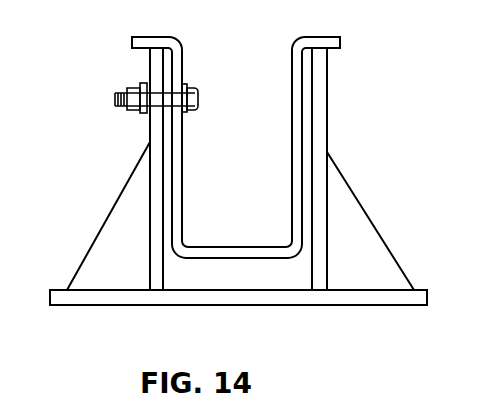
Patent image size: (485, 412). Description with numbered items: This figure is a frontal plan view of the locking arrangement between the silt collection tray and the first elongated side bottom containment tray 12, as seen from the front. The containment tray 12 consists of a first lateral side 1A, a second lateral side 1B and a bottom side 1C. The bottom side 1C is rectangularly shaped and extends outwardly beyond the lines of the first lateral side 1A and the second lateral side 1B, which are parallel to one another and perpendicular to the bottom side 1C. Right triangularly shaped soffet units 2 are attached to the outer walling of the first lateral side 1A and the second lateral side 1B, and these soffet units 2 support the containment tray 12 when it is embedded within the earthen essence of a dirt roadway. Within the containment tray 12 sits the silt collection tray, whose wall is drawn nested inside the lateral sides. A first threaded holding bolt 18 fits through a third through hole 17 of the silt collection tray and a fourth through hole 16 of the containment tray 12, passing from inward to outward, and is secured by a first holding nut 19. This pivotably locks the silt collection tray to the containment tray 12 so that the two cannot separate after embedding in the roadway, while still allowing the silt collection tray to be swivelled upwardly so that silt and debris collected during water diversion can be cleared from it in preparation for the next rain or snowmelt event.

The first lateral side 1A is at (328, 120).
The second lateral side 1B is at (149, 142).
The bottom side 1C is at (87, 305).
The soffet unit 2 is at (374, 218).
The first elongated side bottom containment tray 12 is at (278, 303).
The fourth through hole 16 is at (148, 68).
The third through hole 17 is at (171, 84).
The first threaded holding bolt 18 is at (193, 100).
The first holding nut 19 is at (137, 88).